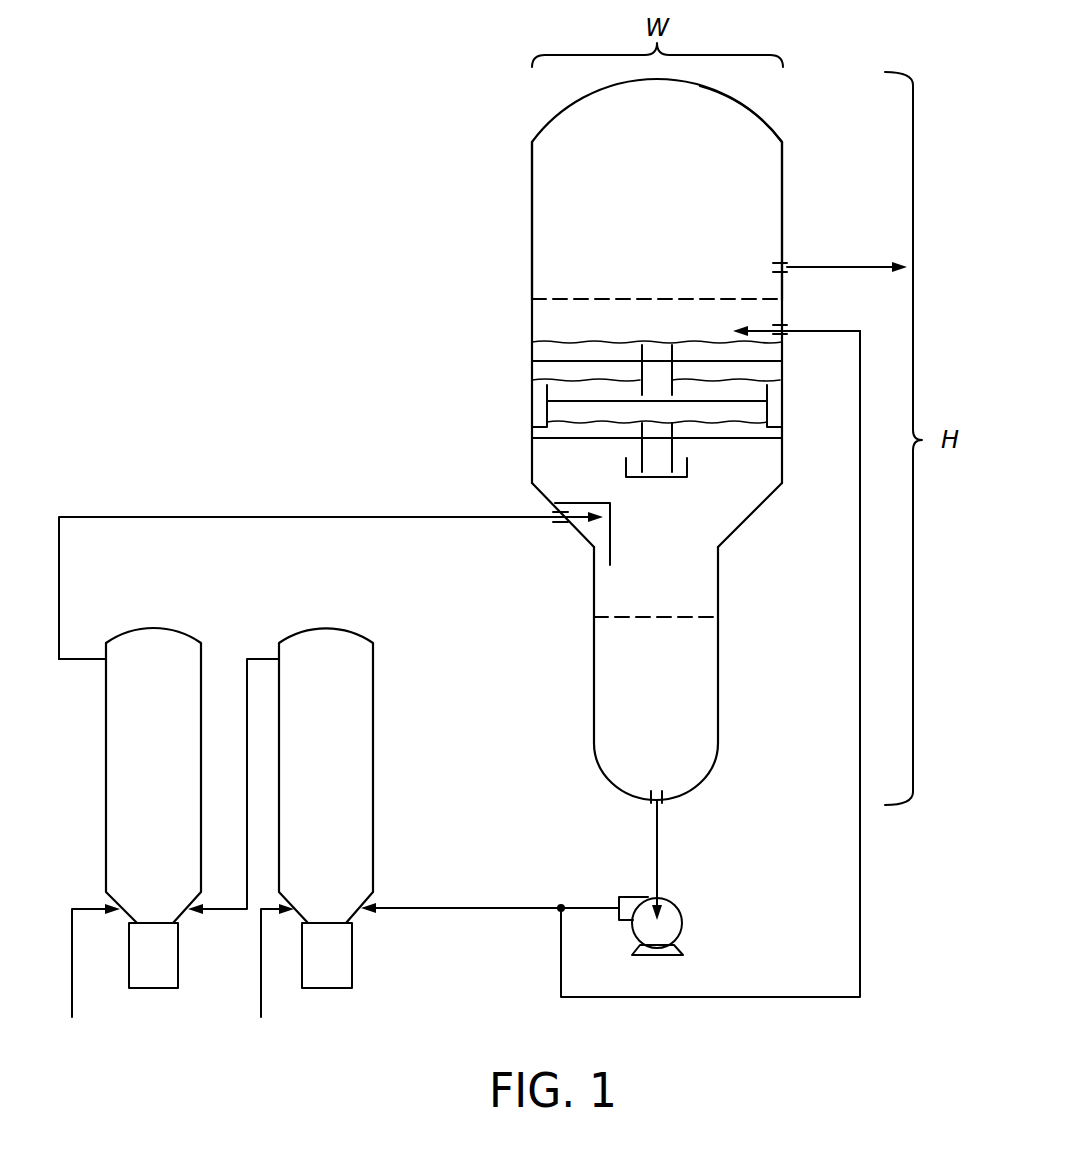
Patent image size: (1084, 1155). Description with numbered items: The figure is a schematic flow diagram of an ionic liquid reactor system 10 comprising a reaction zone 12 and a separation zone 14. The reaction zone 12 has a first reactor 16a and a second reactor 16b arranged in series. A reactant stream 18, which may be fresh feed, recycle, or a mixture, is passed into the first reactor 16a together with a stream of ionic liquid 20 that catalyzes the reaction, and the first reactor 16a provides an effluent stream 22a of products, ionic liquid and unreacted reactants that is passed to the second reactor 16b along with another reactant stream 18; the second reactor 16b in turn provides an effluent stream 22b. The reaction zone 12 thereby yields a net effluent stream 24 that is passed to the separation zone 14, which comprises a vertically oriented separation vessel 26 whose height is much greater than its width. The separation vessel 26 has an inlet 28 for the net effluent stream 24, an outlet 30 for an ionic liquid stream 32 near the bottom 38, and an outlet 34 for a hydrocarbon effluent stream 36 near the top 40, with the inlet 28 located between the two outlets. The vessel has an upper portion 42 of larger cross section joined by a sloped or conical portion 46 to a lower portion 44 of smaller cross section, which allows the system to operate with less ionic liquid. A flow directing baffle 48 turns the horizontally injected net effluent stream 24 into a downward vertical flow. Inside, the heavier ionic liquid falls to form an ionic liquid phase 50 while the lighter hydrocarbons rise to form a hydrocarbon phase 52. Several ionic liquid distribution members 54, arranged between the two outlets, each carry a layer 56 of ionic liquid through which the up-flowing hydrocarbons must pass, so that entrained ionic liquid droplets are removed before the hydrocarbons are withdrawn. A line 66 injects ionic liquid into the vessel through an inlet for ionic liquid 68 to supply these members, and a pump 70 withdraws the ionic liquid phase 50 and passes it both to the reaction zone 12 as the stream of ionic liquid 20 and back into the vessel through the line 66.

The ionic liquid reactor system 10 is at (140, 178).
The reaction zone 12 is at (252, 600).
The separation zone 14 is at (498, 215).
The first reactor 16a is at (375, 660).
The second reactor 16b is at (155, 628).
The reactant stream 18 is at (72, 997).
The stream of ionic liquid 20 is at (418, 905).
The effluent stream 22a is at (265, 655).
The effluent stream 22b is at (68, 665).
The net effluent stream 24 is at (200, 516).
The separation vessel 26 is at (532, 277).
The inlet 28 is at (555, 521).
The outlet 30 is at (665, 797).
The ionic liquid stream 32 is at (660, 870).
The outlet 34 is at (789, 265).
The hydrocarbon effluent stream 36 is at (820, 270).
The bottom 38 is at (618, 787).
The top 40 is at (786, 131).
The upper portion 42 is at (532, 159).
The lower portion 44 is at (720, 642).
The conical portion 46 is at (752, 520).
The flow directing baffle 48 is at (620, 521).
The ionic liquid phase 50 is at (687, 703).
The hydrocarbon phase 52 is at (752, 194).
The ionic liquid distribution member 54 is at (762, 362).
The layer of ionic liquid 56 is at (545, 350).
The line 66 is at (860, 893).
The inlet for ionic liquid 68 is at (790, 332).
The pump 70 is at (672, 924).